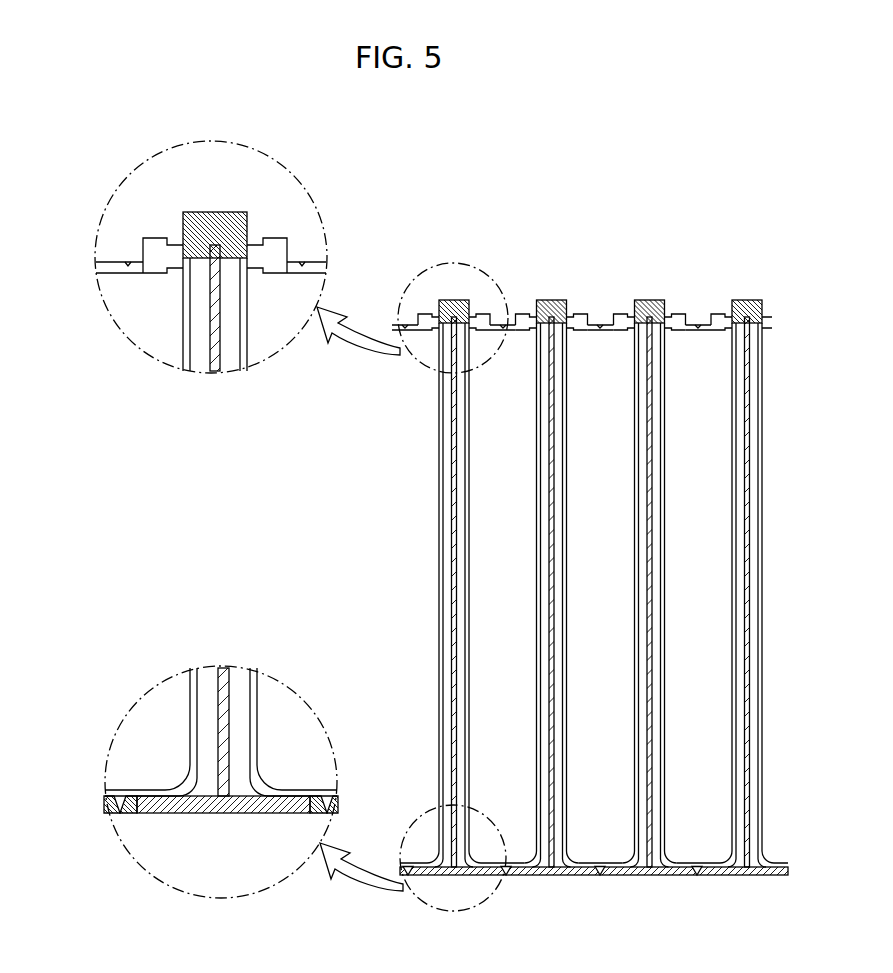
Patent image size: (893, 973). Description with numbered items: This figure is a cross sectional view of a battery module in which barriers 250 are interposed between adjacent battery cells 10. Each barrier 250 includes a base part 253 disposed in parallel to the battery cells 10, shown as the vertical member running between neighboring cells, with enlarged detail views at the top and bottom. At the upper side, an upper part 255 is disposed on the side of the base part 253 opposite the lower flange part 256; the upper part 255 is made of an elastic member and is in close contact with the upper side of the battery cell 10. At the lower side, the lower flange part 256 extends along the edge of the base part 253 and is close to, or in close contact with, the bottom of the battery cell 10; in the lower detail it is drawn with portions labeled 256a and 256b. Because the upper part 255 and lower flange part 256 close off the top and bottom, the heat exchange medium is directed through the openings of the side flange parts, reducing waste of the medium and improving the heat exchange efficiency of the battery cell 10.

The battery cell 10 is at (148, 306).
The barrier 250 is at (225, 196).
The base part 253 is at (222, 345).
The upper part 255 is at (247, 228).
The lower flange part 256 is at (52, 858).
The plate body 256a is at (160, 814).
The edge member 256b is at (128, 814).